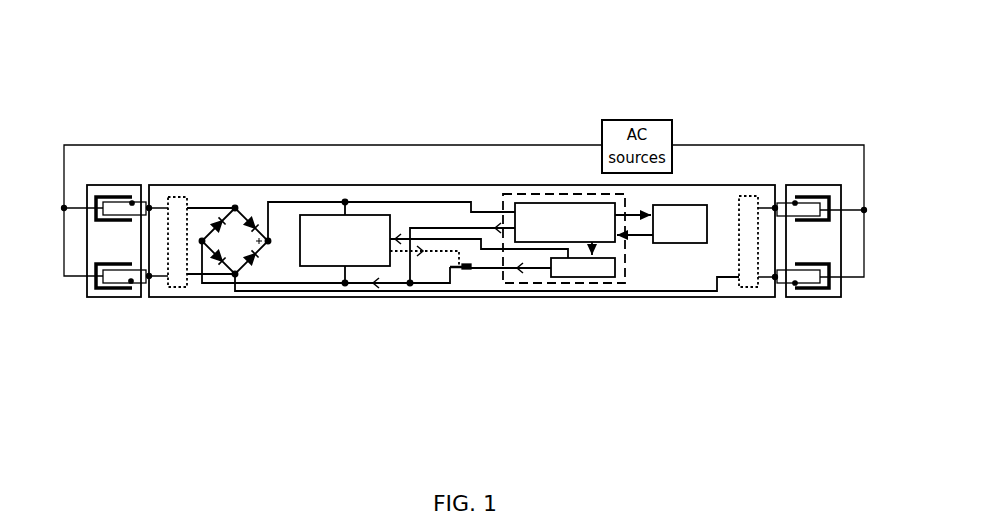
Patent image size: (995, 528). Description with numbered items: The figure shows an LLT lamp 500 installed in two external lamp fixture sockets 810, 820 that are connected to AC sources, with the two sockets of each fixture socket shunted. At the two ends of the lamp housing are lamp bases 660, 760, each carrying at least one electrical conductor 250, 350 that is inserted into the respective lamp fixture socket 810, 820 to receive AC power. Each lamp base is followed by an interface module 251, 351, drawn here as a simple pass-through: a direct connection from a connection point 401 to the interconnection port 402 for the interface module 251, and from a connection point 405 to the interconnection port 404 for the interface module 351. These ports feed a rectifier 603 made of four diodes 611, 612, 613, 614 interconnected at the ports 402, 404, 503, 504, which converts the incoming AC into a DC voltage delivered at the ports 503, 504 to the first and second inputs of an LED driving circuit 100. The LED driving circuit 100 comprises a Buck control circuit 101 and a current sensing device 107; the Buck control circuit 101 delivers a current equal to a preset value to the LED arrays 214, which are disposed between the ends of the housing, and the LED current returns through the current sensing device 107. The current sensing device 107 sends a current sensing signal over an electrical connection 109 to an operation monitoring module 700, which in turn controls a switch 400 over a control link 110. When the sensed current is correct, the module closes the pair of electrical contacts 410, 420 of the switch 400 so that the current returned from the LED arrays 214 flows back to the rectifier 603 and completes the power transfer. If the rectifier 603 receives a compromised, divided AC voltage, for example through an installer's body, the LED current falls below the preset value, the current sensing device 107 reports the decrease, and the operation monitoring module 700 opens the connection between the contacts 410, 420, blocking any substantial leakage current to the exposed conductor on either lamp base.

The LED driving circuit 100 is at (565, 286).
The Buck control circuit 101 is at (569, 213).
The current sensing device 107 is at (587, 278).
The electrical connection 109 is at (429, 237).
The control link 110 is at (438, 253).
The LED arrays 214 is at (673, 244).
The electrical conductor 250 is at (113, 205).
The interface module 251 is at (177, 288).
The electrical conductor 350 is at (813, 210).
The interface module 351 is at (747, 290).
The switch 400 is at (496, 341).
The connection point 401 is at (149, 204).
The interconnection port 402 is at (235, 207).
The interconnection port 404 is at (235, 276).
The connection point 405 is at (777, 207).
The electrical contact 410 is at (453, 269).
The electrical contact 420 is at (469, 268).
The LLT lamp 500 is at (569, 236).
The interconnection port 503 is at (267, 243).
The interconnection port 504 is at (203, 243).
The rectifier 603 is at (265, 209).
The diode 611 is at (253, 219).
The diode 612 is at (254, 263).
The diode 613 is at (217, 219).
The diode 614 is at (221, 263).
The lamp base 660 is at (163, 198).
The operation monitoring module 700 is at (360, 259).
The lamp base 760 is at (753, 201).
The lamp fixture socket 810 is at (108, 244).
The lamp fixture socket 820 is at (816, 228).